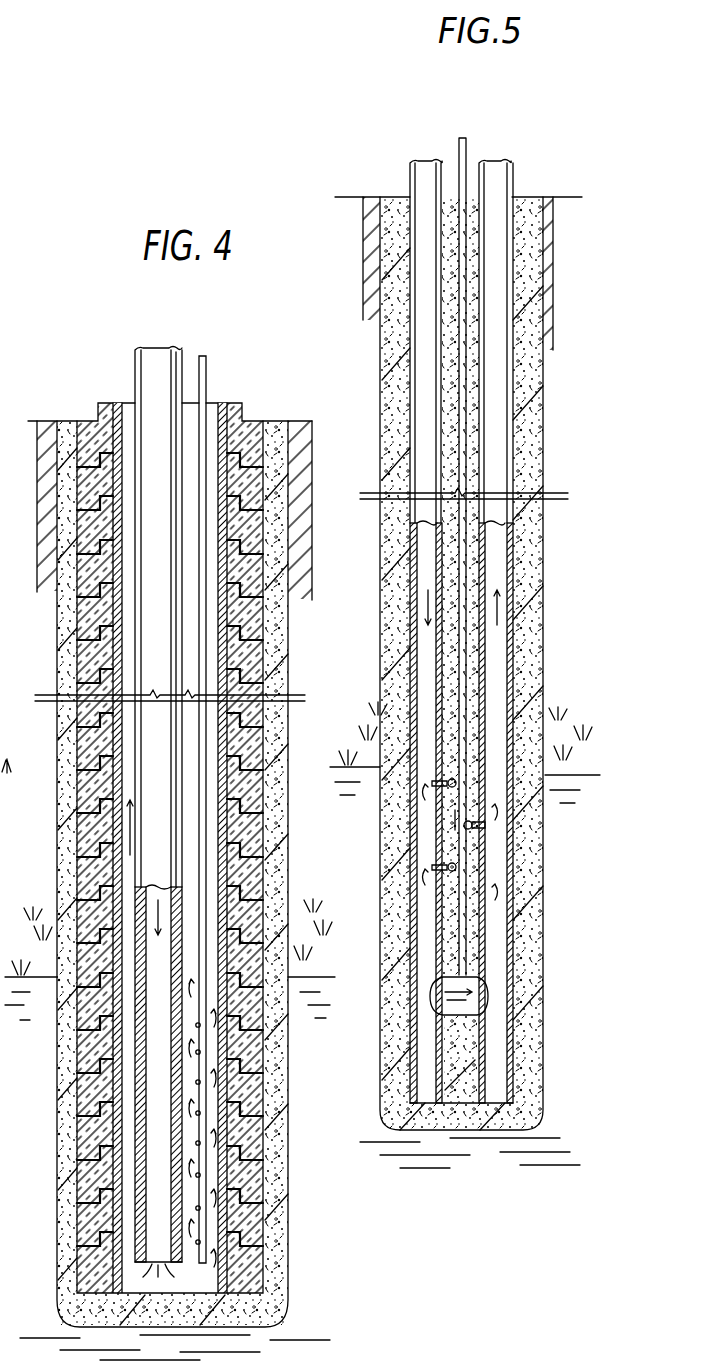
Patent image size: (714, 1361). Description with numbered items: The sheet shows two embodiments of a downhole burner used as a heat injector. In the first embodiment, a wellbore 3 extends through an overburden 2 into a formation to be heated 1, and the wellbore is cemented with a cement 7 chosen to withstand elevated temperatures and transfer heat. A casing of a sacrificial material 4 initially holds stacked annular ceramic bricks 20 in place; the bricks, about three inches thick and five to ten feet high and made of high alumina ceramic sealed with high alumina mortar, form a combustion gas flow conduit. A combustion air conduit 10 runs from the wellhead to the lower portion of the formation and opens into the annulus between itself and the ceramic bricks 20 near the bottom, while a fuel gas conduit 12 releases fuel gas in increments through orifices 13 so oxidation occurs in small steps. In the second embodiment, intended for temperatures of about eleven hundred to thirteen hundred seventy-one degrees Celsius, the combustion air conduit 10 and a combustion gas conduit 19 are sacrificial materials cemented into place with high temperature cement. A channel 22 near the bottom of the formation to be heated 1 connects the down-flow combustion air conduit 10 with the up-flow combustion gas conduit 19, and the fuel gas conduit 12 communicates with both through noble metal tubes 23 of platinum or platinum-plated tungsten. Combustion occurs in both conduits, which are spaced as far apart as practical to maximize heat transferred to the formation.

In FIG. 4, the formation to be heated 1 is at (34, 1193).
In FIG. 5, the formation to be heated 1 is at (352, 863).
In FIG. 4, the overburden 2 is at (21, 635).
In FIG. 5, the overburden 2 is at (352, 408).
In FIG. 4, the wellbore 3 is at (290, 535).
In FIG. 5, the wellbore 3 is at (540, 307).
In FIG. 4, the casing of a sacrificial material 4 is at (228, 930).
In FIG. 4, the cement 7 is at (65, 1065).
In FIG. 4, the combustion air conduit 10 is at (128, 368).
In FIG. 5, the combustion air conduit 10 is at (412, 322).
In FIG. 4, the fuel gas conduit 12 is at (213, 366).
In FIG. 5, the fuel gas conduit 12 is at (470, 402).
In FIG. 4, the orifices 13 is at (209, 1117).
In FIG. 5, the combustion gas conduit 19 is at (514, 568).
In FIG. 4, the ceramic bricks 20 is at (90, 833).
In FIG. 5, the channel 22 is at (475, 989).
In FIG. 5, the noble metal tubes 23 is at (471, 822).